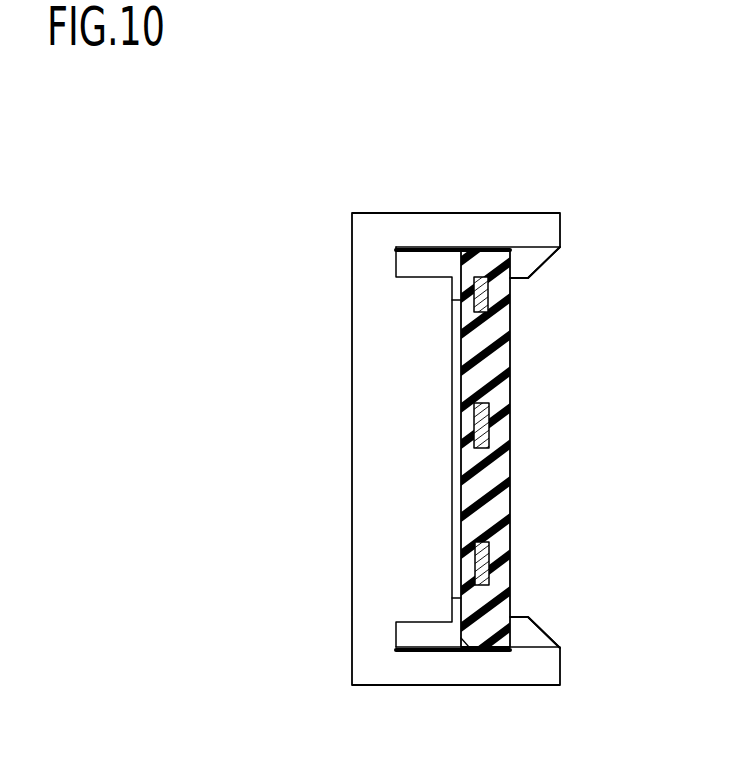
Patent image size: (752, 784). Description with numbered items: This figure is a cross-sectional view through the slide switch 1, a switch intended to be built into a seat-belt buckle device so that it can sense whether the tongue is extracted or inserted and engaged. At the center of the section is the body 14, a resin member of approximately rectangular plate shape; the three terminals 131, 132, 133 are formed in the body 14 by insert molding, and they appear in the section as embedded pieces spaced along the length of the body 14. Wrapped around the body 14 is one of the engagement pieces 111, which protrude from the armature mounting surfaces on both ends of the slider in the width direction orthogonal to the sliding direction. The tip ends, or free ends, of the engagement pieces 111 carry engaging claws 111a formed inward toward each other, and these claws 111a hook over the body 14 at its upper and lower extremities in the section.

The slide switch 1 is at (218, 263).
The engagement piece 111 is at (503, 223).
The engaging claw 111a is at (533, 266).
The body 14 is at (509, 477).
The terminal 131 is at (461, 308).
The terminal 132 is at (480, 425).
The terminal 133 is at (478, 573).